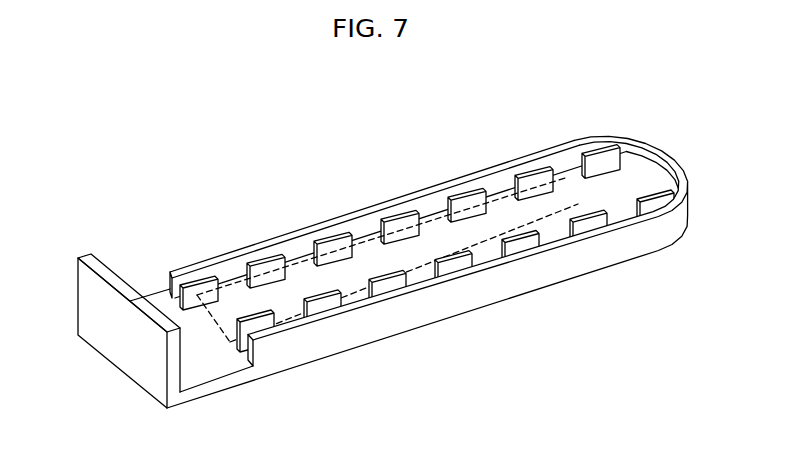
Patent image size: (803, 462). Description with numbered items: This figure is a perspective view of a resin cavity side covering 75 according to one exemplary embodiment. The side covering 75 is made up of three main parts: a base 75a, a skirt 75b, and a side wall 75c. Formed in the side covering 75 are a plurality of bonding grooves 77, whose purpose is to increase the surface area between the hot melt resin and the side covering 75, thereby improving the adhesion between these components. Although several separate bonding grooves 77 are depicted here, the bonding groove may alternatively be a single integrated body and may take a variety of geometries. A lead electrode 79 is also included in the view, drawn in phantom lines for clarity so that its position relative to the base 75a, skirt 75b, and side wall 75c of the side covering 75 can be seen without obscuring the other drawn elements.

The side covering 75 is at (208, 191).
The base 75a is at (160, 300).
The skirt 75b is at (229, 268).
The side wall 75c is at (92, 266).
The bonding grooves 77 is at (335, 242).
The lead electrode 79 is at (440, 226).